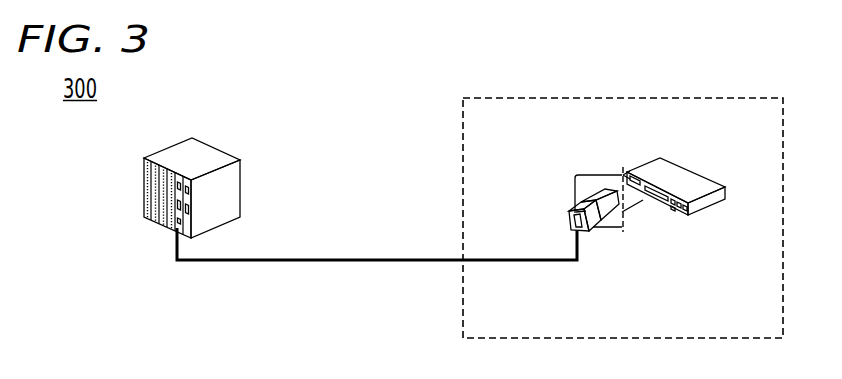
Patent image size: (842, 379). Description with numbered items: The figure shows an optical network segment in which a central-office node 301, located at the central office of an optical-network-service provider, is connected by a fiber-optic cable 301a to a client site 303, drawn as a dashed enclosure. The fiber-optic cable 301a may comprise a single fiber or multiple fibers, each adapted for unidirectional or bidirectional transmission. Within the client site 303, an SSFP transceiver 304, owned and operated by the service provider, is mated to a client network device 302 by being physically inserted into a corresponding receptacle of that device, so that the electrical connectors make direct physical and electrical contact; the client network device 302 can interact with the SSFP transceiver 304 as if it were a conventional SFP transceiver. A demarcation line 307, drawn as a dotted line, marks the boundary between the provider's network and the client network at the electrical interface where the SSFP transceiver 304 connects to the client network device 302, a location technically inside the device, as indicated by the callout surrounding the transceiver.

The central-office node 301 is at (207, 156).
The fiber-optic cable 301a is at (315, 261).
The client network device 302 is at (680, 176).
The client site 303 is at (705, 96).
The SSFP transceiver 304 is at (590, 173).
The demarcation line 307 is at (626, 221).